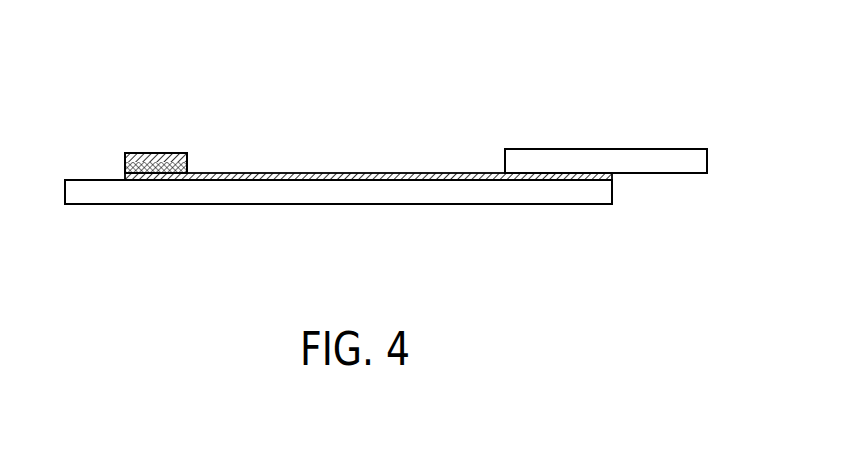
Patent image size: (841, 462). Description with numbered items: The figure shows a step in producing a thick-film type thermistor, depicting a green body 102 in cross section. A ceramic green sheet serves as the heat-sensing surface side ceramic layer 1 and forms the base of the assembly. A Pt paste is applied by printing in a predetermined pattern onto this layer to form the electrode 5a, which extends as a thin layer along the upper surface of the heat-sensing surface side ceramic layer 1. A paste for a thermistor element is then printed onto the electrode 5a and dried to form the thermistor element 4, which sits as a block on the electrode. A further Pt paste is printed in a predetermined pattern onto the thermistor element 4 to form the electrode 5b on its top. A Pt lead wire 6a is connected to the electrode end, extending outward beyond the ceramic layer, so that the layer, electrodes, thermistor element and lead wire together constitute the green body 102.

The heat-sensing surface side ceramic layer 1 is at (95, 179).
The thermistor element 4 is at (187, 165).
The electrode 5a is at (342, 172).
The electrode 5b is at (158, 153).
The lead wire 6a is at (560, 149).
The green body 102 is at (332, 212).